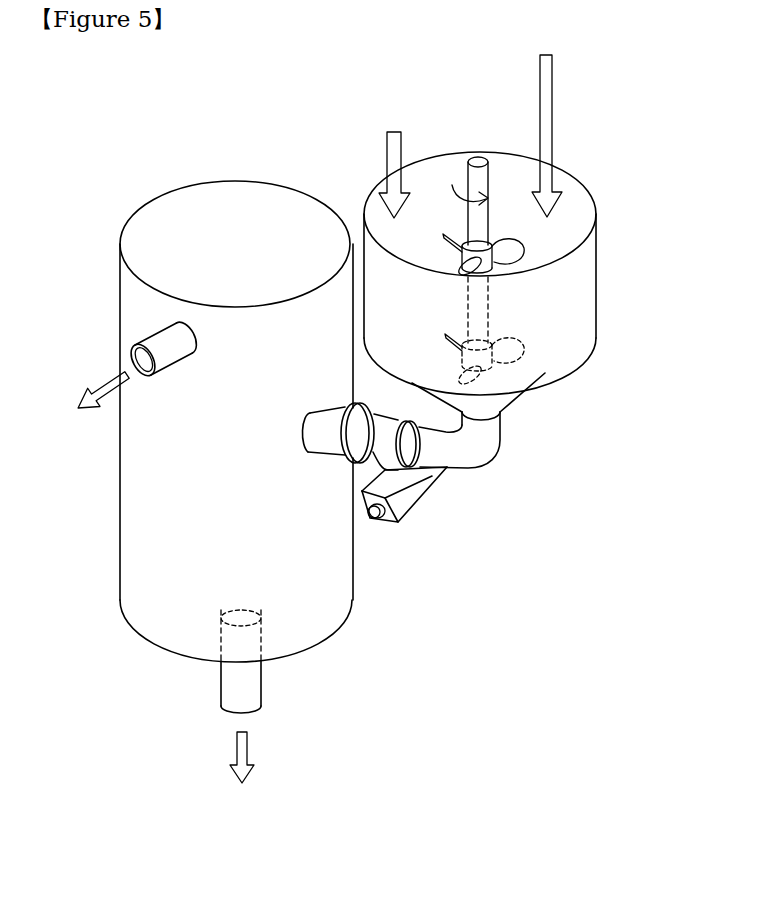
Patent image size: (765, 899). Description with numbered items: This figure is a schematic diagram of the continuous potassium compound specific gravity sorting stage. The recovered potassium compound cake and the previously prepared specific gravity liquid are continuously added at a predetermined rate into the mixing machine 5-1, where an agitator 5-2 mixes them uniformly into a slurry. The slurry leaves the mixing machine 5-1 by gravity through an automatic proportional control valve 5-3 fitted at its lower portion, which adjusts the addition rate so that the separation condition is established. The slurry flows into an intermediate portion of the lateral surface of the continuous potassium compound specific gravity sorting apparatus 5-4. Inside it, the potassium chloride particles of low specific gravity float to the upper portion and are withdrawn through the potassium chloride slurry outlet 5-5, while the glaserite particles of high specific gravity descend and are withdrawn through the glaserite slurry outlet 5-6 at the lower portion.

The mixing machine 5-1 is at (580, 290).
The agitator 5-2 is at (494, 344).
The automatic proportional control valve 5-3 is at (415, 492).
The continuous potassium compound specific gravity sorting apparatus 5-4 is at (340, 585).
The potassium chloride slurry outlet 5-5 is at (140, 338).
The glaserite slurry outlet 5-6 is at (233, 690).